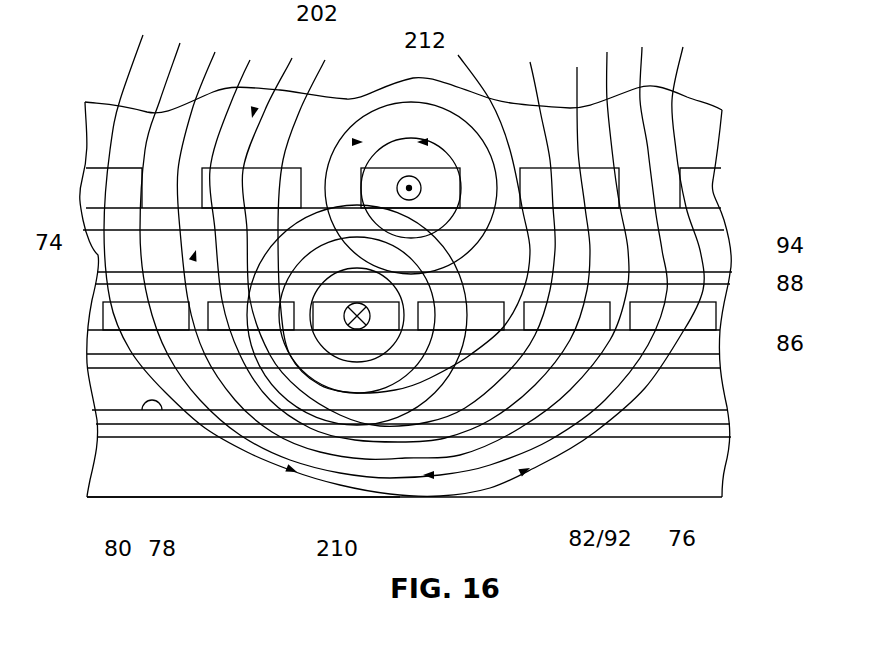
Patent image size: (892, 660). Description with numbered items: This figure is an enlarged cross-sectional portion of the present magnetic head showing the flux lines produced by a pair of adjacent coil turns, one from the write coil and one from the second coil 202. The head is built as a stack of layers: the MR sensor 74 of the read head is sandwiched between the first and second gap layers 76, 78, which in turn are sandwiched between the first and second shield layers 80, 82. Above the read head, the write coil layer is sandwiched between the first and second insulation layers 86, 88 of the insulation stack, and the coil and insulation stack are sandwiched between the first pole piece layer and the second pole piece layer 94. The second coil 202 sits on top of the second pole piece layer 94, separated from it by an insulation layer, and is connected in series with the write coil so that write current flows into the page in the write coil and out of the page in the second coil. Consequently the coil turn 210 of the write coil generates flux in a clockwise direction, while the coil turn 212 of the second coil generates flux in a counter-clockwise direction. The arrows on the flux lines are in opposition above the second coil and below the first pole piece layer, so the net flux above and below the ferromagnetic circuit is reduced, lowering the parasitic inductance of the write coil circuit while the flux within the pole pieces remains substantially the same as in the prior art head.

The MR sensor 74 is at (128, 272).
The first gap layer 76 is at (680, 438).
The second gap layer 78 is at (158, 530).
The first shield layer 80 is at (118, 530).
The second shield layer 82 is at (655, 402).
The first insulation layer 86 is at (713, 345).
The second insulation layer 88 is at (717, 292).
The second pole piece layer 94 is at (727, 253).
The second coil layer 202 is at (283, 160).
The coil turn of the write coil 210 is at (331, 528).
The coil turn of the second coil 212 is at (436, 175).